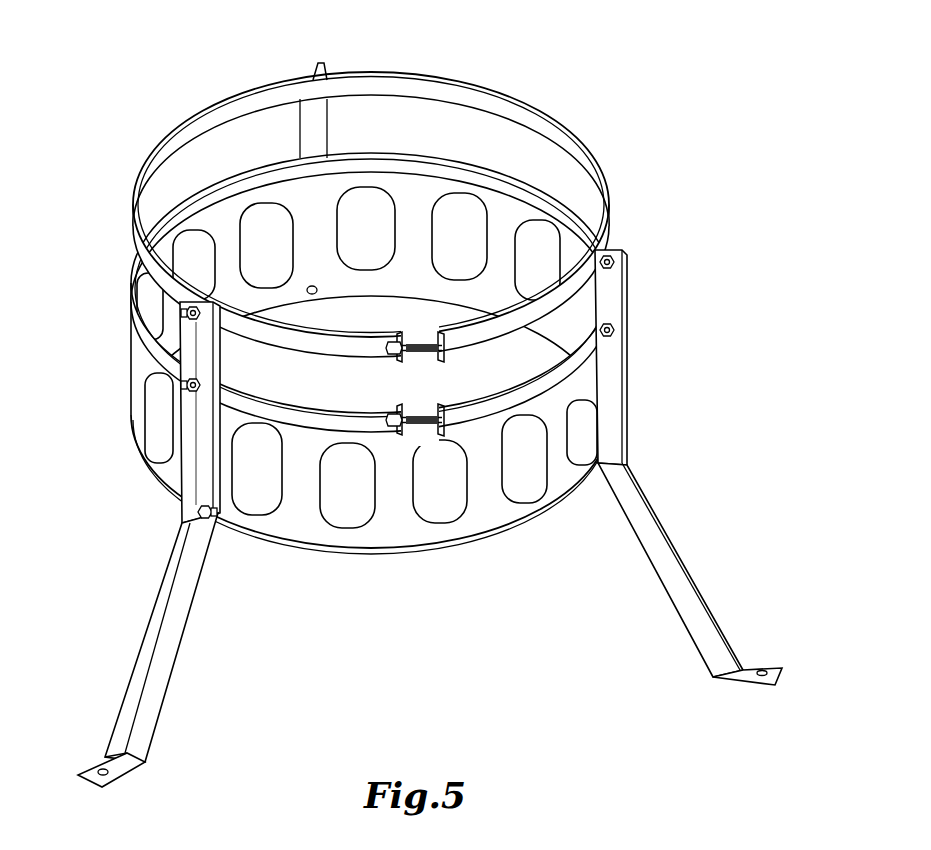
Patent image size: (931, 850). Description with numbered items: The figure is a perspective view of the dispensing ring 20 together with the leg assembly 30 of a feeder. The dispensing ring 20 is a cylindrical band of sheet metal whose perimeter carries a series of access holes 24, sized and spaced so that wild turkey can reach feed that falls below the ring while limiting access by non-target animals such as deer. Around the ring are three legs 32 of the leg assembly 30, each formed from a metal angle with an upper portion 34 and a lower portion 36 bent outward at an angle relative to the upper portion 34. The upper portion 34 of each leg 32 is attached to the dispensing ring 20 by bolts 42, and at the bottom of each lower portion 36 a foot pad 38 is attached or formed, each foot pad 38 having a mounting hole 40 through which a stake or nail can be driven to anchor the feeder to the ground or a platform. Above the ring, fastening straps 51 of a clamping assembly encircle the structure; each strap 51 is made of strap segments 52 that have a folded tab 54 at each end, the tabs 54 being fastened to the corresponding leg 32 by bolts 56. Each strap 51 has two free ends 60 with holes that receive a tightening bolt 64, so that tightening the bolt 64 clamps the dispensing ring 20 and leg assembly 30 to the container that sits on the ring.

The dispensing ring 20 is at (454, 566).
The access holes 24 is at (183, 277).
The leg assembly 30 is at (645, 378).
The legs 32 is at (346, 54).
The upper portion 34 is at (316, 128).
The lower portion 36 is at (167, 655).
The foot pad 38 is at (122, 765).
The mounting holes 40 is at (100, 768).
The bolts 42 is at (198, 513).
The fastening straps 51 is at (508, 188).
The strap segments 52 is at (458, 332).
The tab 54 is at (616, 268).
The bolts 56 is at (185, 313).
The free ends 60 is at (402, 363).
The tightening bolt 64 is at (415, 340).